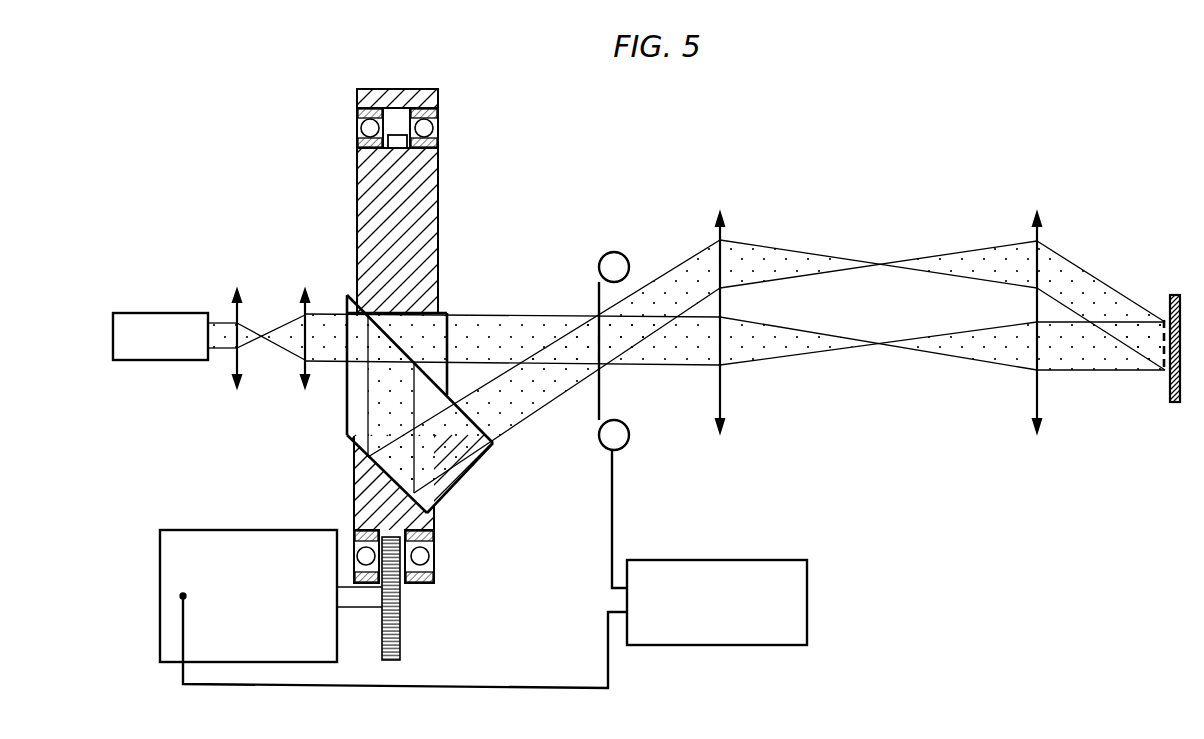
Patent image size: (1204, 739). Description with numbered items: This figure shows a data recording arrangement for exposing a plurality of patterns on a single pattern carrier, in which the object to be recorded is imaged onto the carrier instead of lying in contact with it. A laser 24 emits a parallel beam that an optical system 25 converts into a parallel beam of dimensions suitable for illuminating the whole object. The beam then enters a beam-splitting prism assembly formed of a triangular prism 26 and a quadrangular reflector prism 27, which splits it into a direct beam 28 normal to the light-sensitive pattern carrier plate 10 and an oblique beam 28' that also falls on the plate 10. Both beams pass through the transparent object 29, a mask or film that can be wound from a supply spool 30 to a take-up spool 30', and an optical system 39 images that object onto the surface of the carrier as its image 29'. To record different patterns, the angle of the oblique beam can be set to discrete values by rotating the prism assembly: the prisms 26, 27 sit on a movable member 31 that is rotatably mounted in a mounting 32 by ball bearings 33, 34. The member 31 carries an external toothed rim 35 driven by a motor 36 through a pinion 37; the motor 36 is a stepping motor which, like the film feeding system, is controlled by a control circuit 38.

The light-sensitive pattern carrier plate 10 is at (1175, 403).
The laser 24 is at (160, 301).
The optical system 25 is at (302, 291).
The triangular prism 26 is at (446, 320).
The quadrangular reflector prism 27 is at (458, 468).
The direct beam 28 is at (686, 327).
The oblique beam 28' is at (766, 366).
The transparent object 29 is at (616, 351).
The image of the transparent object 29' is at (1152, 326).
The supply spool 30 is at (614, 253).
The take-up spool 30' is at (632, 435).
The movable member 31 is at (426, 211).
The mounting 32 is at (382, 97).
The ball bearing 33 is at (358, 123).
The ball bearing 34 is at (438, 122).
The external toothed rim 35 is at (398, 141).
The motor 36 is at (167, 551).
The pinion 37 is at (401, 630).
The control circuit 38 is at (808, 607).
The optical system 39 is at (723, 212).